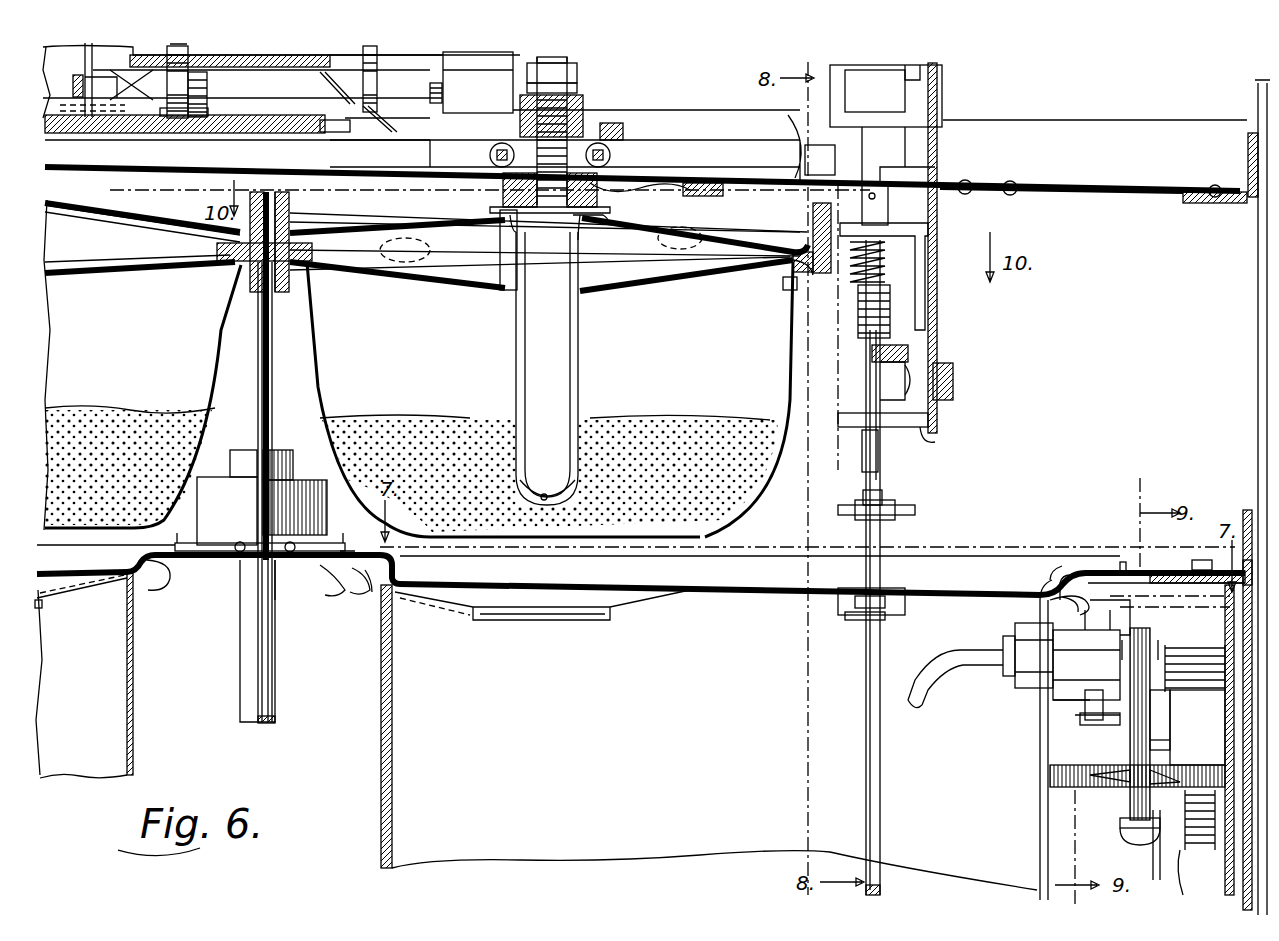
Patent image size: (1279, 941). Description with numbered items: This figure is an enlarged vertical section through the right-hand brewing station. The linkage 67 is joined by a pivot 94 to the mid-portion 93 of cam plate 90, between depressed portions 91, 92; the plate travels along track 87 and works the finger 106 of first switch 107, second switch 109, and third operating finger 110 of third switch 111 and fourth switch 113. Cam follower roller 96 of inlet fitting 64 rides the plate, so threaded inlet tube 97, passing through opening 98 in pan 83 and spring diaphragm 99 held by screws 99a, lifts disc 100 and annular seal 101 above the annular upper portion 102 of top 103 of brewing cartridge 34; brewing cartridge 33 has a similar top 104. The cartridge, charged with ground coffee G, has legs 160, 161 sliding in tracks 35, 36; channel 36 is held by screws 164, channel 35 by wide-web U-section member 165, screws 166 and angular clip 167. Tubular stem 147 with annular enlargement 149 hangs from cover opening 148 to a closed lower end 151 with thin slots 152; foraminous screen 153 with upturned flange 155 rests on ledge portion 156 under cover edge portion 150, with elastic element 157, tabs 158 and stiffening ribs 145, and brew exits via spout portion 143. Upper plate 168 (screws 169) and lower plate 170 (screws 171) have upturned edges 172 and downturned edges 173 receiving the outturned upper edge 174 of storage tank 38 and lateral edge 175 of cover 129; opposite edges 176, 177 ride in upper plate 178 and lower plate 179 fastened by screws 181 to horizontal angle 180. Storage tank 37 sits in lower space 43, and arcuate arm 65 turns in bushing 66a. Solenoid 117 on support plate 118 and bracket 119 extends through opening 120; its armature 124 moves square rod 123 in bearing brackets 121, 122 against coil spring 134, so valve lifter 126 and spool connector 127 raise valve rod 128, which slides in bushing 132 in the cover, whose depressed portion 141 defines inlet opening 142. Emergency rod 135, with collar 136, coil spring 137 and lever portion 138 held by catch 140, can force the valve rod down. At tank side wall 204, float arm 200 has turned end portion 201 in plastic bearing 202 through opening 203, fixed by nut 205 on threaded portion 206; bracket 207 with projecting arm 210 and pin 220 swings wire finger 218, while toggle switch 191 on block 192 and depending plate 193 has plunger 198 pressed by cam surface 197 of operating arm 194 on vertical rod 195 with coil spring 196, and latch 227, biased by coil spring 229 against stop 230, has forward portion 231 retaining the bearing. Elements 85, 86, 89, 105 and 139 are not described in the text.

The depressed portion 92 is at (92, 126).
The mid-portion 93 is at (195, 132).
The linkage 67 is at (281, 71).
The pivot 94 is at (200, 85).
The second switch 109 is at (171, 81).
The first switch 107 is at (190, 100).
The finger 106 is at (80, 84).
The brace 105 is at (322, 84).
The fourth switch 113 is at (386, 79).
The third operating finger 110 is at (430, 95).
The third switch 111 is at (490, 92).
The cam follower roller 96 is at (572, 78).
The inlet fitting 64 is at (586, 98).
The cam plate 90 is at (615, 125).
The track 87 is at (678, 140).
The pan 83 is at (785, 147).
The bolt 89 is at (490, 152).
The opening 98 is at (445, 143).
The depressed portion 91 is at (300, 118).
The screws 166 is at (310, 165).
The metal spring diaphragm 99 is at (682, 182).
The screws 99a is at (720, 182).
The top 104 is at (90, 212).
The elastic element 157 is at (225, 245).
The track 35 is at (290, 212).
The leg 161 is at (545, 228).
The upturned peripheral flange 155 is at (205, 262).
The ledge portion 156 is at (230, 268).
The angular clip 167 is at (312, 290).
The wide-web U-section member 165 is at (272, 340).
The tabs 158 is at (420, 262).
The foraminous screen 153 is at (470, 283).
The edge portion 150 is at (488, 290).
The annular enlargement 149 is at (506, 300).
The disc 100 is at (510, 225).
The annular seal 101 is at (505, 252).
The cover opening 148 is at (540, 212).
The inlet tube 97 is at (580, 220).
The rearward spout portion 143 is at (582, 262).
The annular upper portion 102 is at (660, 210).
The top 103 is at (735, 236).
The screws 164 is at (800, 235).
The stiffening ribs 145 is at (730, 275).
The leg 160 is at (775, 280).
The track 36 is at (822, 278).
The brewing cartridge 34 is at (825, 312).
The tubular stem 147 is at (580, 356).
The thin slots 152 is at (545, 490).
The closed lower end 151 is at (572, 495).
The ground coffee G is at (740, 500).
The brewing cartridge 33 is at (202, 418).
The bushing 66a is at (215, 485).
The upper plate 168 is at (320, 500).
The longitudinal edges 172 is at (345, 540).
The screws 169 is at (262, 535).
The lateral edge 175 is at (450, 557).
The screws 171 is at (215, 570).
The lower plate 170 is at (315, 572).
The outturned upper edge 174 is at (335, 585).
The longitudinal edges 173 is at (360, 605).
The arcuate rod 65 is at (245, 682).
The lower space 43 is at (330, 724).
The first storage tank 37 is at (133, 734).
The second storage tank 38 is at (380, 778).
The depressed portion 141 is at (640, 605).
The inlet opening 142 is at (590, 625).
The second solenoid 117 is at (905, 87).
The support plate 118 is at (935, 312).
The armature 124 is at (905, 140).
The opening 120 is at (870, 160).
The beam 85 is at (1090, 120).
The wall 86 is at (1240, 90).
The bracket 119 is at (980, 175).
The bearing bracket 121 is at (905, 230).
The coil spring 134 is at (890, 262).
The coil spring 137 is at (870, 320).
The lever portion 138 is at (905, 350).
The collar 136 is at (865, 345).
The lever 139 is at (860, 376).
The rod 123 is at (860, 380).
The catch 140 is at (950, 366).
The bearing bracket 122 is at (920, 440).
The emergency actuating rod 135 is at (865, 465).
The spool connector 127 is at (885, 505).
The bifurcated valve lifter 126 is at (905, 516).
The cover 129 is at (930, 590).
The bushing 132 is at (840, 612).
The valve rod 128 is at (862, 720).
The horizontal angle 180 is at (1240, 520).
The lateral edge 177 is at (1085, 570).
The outturned edge 176 is at (1075, 575).
The upper plate 178 is at (1115, 570).
The lower plate 179 is at (1140, 572).
The forward portion 231 is at (1060, 580).
The side wall 204 is at (1038, 812).
The screws 181 is at (1190, 598).
The depending plate 193 is at (1238, 622).
The coil spring 229 is at (1195, 665).
The nut 205 is at (1040, 626).
The reduced diameter threaded portion 206 is at (1010, 640).
The opening 203 is at (1040, 655).
The turned end portion 201 is at (995, 680).
The arm 200 is at (935, 715).
The plastic bearing 202 is at (1060, 705).
The stop 230 is at (1080, 725).
The latch 227 is at (1085, 700).
The bracket 207 is at (1130, 805).
The toggle switch 191 is at (1160, 715).
The block 192 is at (1165, 730).
The depending plunger 198 is at (1150, 747).
The cam surface 197 is at (1110, 775).
The operating arm 194 is at (1050, 772).
The pin 220 is at (1135, 826).
The projecting arm 210 is at (1132, 835).
The wire finger 218 is at (1160, 861).
The vertical rod 195 is at (1200, 842).
The coil spring 196 is at (1196, 872).